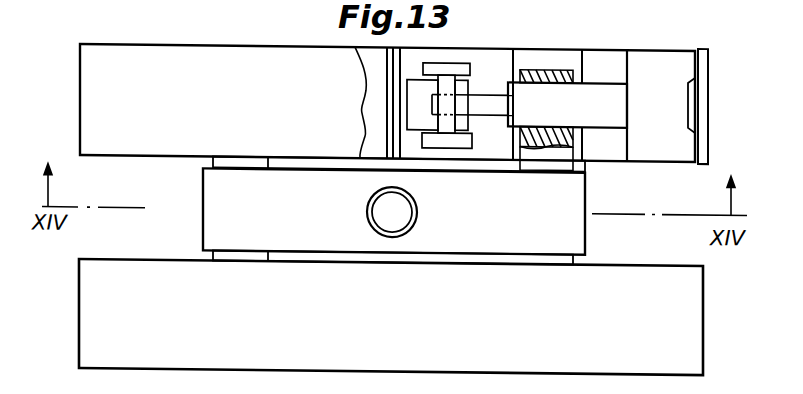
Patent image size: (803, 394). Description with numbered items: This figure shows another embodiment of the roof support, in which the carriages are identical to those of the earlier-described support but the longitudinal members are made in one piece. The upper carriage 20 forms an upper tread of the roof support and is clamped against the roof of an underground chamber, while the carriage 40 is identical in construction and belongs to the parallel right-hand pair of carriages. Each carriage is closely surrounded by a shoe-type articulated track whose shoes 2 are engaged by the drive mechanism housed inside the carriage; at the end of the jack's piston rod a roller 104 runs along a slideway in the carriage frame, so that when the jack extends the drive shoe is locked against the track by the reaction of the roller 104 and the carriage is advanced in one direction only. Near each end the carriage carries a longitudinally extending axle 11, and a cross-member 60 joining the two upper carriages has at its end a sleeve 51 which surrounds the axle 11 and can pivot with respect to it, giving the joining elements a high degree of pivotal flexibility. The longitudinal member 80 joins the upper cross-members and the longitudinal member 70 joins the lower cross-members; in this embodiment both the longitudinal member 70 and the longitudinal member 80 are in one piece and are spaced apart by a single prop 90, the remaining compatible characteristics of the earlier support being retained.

The shoes 2 is at (552, 30).
The axle 11 is at (598, 86).
The carriage 20 is at (98, 71).
The carriage 40 is at (122, 320).
The sleeve 51 is at (547, 68).
The cross-member 60 is at (213, 158).
The longitudinal member 70 is at (550, 225).
The longitudinal member 80 is at (313, 187).
The prop 90 is at (397, 208).
The roller 104 is at (463, 64).